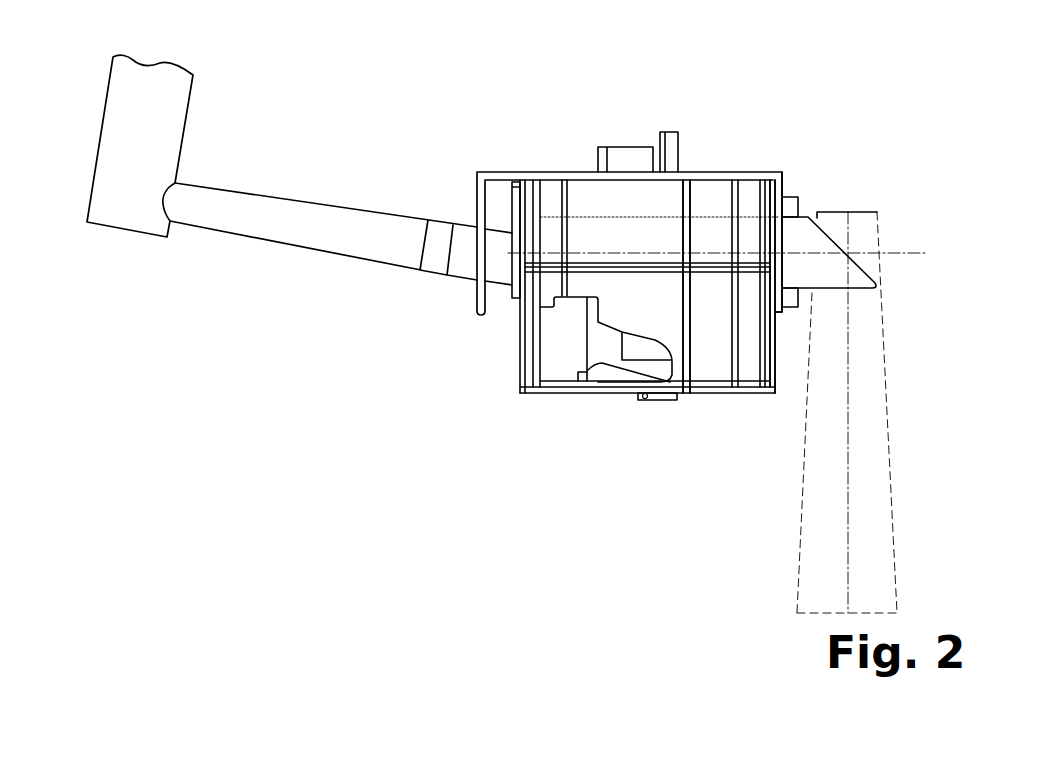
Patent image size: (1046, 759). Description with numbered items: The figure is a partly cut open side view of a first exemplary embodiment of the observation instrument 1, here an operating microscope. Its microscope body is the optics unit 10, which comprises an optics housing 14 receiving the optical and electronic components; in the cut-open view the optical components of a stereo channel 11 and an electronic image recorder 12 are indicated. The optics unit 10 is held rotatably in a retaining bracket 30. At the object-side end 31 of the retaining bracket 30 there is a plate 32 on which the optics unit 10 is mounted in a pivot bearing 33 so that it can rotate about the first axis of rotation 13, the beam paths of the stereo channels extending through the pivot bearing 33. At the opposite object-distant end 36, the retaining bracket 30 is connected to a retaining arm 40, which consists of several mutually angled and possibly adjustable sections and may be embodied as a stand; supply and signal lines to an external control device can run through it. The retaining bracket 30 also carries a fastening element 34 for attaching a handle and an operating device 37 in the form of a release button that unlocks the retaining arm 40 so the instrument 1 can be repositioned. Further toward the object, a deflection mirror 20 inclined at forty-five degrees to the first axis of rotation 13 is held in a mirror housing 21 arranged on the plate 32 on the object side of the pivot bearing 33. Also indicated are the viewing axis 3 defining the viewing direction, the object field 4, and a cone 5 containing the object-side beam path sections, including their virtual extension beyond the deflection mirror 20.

The observation instrument 1 is at (395, 90).
The viewing axis 3 is at (848, 478).
The object field 4 is at (812, 613).
The cone 5 is at (802, 508).
The optics unit 10 is at (628, 258).
The stereo channel 11 is at (643, 353).
The electronic image recorder 12 is at (588, 372).
The first axis of rotation 13 is at (903, 257).
The optics housing 14 is at (714, 365).
The deflection mirror 20 is at (822, 224).
The mirror housing 21 is at (827, 278).
The retaining bracket 30 is at (515, 180).
The object-side end 31 is at (764, 139).
The plate 32 is at (778, 186).
The pivot bearing 33 is at (790, 307).
The fastening element 34 is at (668, 135).
The object-distant end 36 is at (480, 105).
The operating device 37 is at (620, 155).
The retaining arm 40 is at (195, 262).